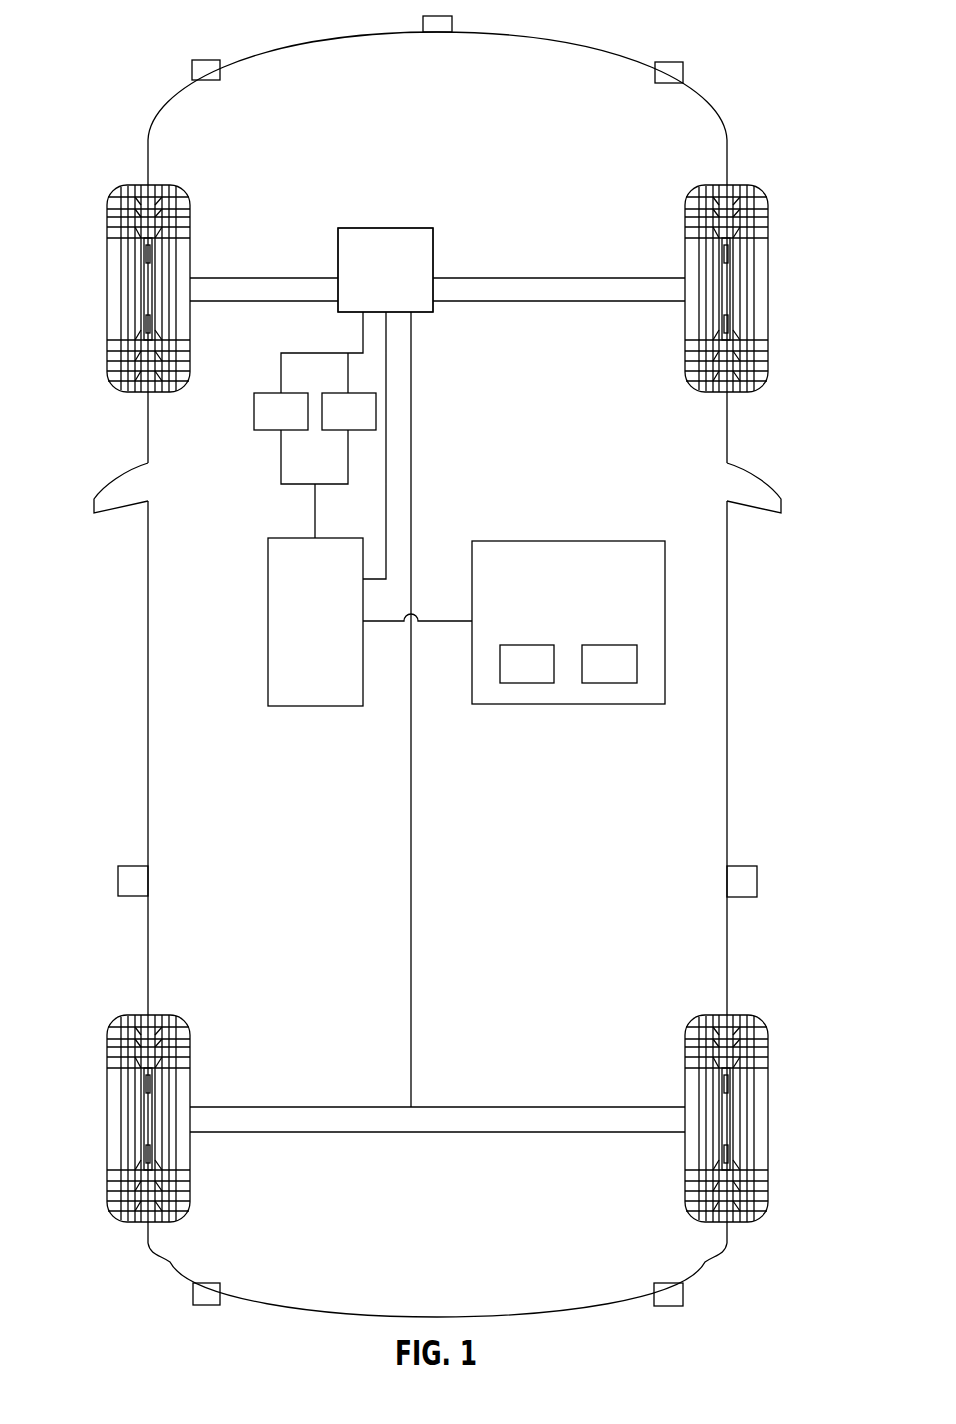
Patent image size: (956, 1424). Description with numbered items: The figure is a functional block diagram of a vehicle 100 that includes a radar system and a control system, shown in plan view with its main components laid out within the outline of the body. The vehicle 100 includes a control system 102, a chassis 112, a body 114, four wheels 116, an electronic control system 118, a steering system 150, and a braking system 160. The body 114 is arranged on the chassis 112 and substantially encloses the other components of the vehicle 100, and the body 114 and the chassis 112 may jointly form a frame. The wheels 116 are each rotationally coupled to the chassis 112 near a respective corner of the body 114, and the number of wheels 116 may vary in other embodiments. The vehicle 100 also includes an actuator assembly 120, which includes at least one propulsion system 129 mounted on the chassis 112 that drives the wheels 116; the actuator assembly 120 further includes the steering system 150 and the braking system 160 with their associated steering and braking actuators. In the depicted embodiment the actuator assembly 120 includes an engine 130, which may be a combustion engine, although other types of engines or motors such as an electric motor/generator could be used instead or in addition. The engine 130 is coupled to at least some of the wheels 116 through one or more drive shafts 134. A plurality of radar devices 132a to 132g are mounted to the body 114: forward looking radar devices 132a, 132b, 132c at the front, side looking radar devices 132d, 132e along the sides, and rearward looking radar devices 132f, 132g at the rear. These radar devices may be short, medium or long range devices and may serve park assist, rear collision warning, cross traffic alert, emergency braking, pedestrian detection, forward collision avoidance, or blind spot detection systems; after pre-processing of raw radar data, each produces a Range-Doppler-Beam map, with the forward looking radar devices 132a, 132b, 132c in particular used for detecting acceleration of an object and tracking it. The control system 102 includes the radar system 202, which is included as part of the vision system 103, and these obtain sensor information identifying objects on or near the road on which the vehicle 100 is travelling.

The vehicle 100 is at (153, 50).
The control system 102 is at (588, 615).
The vision system 103 is at (544, 680).
The radar system 202 is at (626, 680).
The chassis 112 is at (410, 878).
The body 114 is at (148, 683).
The wheels 116 is at (107, 290).
The electronic control system 118 is at (337, 653).
The actuator assembly 120 is at (432, 346).
The propulsion system 129 is at (363, 228).
The engine 130 is at (406, 297).
The radar device 132a is at (207, 60).
The radar device 132b is at (453, 25).
The radar device 132c is at (670, 62).
The radar device 132d is at (118, 880).
The radar device 132e is at (757, 880).
The radar device 132f is at (205, 1305).
The radar device 132g is at (668, 1306).
The drive shaft 134 is at (250, 302).
The steering system 150 is at (299, 425).
The braking system 160 is at (367, 425).